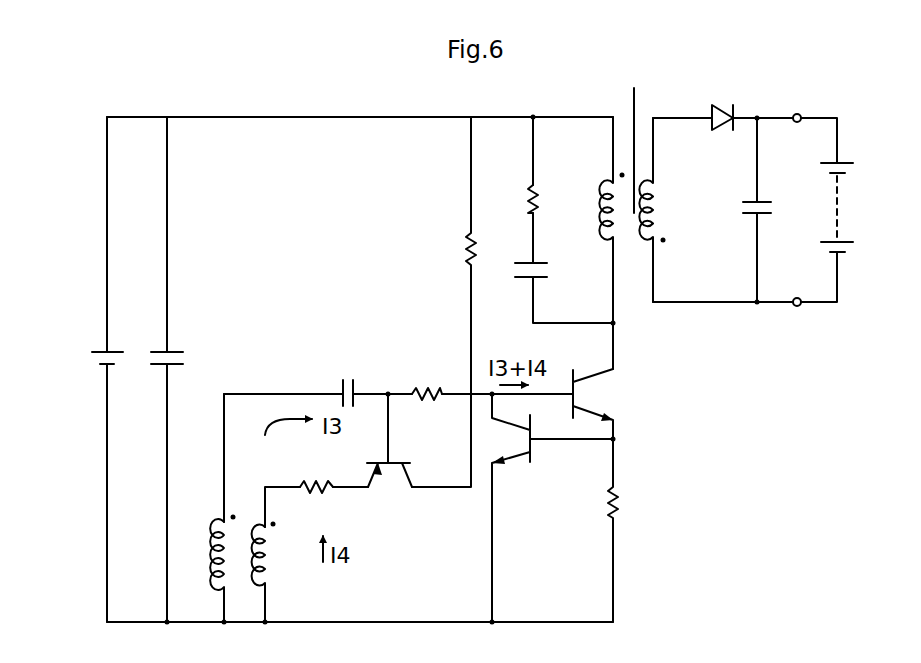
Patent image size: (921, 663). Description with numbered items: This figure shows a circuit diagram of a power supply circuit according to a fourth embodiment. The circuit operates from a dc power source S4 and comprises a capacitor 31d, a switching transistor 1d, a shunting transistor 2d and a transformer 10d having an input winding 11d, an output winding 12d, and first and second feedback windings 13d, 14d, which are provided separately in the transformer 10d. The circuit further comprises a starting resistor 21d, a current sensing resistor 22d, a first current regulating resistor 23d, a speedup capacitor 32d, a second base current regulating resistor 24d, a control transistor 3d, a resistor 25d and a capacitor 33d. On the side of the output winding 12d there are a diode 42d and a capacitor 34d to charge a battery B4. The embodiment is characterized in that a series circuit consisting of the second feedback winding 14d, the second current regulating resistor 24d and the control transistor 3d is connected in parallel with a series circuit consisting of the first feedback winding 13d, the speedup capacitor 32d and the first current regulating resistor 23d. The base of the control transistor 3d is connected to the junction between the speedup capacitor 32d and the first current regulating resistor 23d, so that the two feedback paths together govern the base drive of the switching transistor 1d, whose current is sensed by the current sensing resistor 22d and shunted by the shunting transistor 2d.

The dc power source S4 is at (100, 357).
The capacitor 31d is at (184, 359).
The starting resistor 21d is at (463, 252).
The resistor 25d is at (538, 196).
The capacitor 33d is at (538, 270).
The input winding 11d is at (606, 220).
The transformer 10d is at (641, 137).
The output winding 12d is at (663, 212).
The diode 42d is at (718, 108).
The capacitor 34d is at (762, 205).
The battery B4 is at (841, 205).
The speedup capacitor 32d is at (348, 378).
The first current regulating resistor 23d is at (425, 384).
The control transistor 3d is at (388, 472).
The second base current regulating resistor 24d is at (312, 482).
The first feedback winding 13d is at (218, 555).
The second feedback winding 14d is at (272, 560).
The shunting transistor 2d is at (515, 448).
The switching transistor 1d is at (600, 393).
The current sensing resistor 22d is at (622, 503).